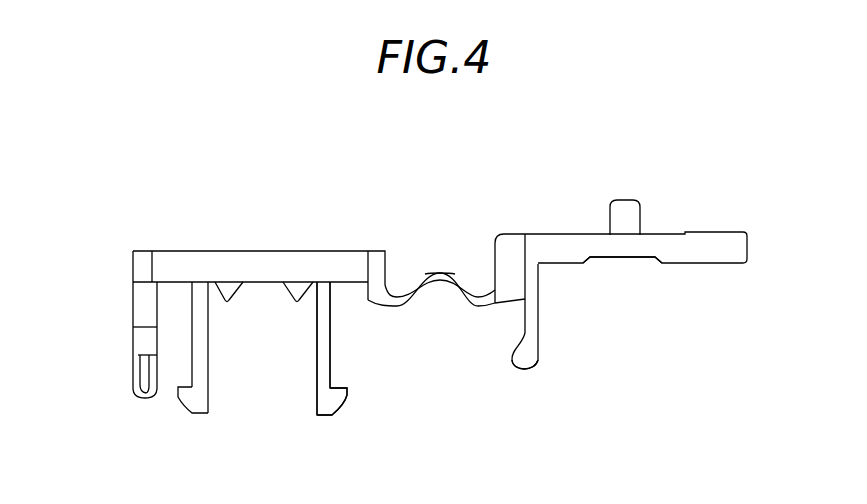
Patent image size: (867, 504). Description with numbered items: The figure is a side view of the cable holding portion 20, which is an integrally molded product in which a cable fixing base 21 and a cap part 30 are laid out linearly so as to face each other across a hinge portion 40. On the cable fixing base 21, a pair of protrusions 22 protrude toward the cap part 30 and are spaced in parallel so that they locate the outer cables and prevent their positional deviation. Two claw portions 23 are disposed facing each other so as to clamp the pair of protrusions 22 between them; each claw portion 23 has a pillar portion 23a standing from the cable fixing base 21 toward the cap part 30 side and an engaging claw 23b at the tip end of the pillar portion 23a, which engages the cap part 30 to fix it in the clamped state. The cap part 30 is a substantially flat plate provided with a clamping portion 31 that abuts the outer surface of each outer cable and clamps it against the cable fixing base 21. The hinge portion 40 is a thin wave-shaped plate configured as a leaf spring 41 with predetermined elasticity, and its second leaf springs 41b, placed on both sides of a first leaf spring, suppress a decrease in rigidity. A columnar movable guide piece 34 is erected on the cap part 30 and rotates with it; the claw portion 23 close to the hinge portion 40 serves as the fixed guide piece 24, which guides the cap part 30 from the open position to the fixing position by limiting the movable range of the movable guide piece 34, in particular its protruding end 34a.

The cable holding portion 20 is at (380, 232).
The cable fixing base 21 is at (280, 263).
The protrusions 22 is at (238, 296).
The claw portion 23 is at (246, 374).
The pillar portion 23a is at (192, 312).
The engaging claw 23b is at (180, 407).
The fixed guide piece 24 is at (312, 372).
The cap part 30 is at (672, 237).
The clamping portion 31 is at (632, 259).
The movable guide piece 34 is at (539, 318).
The protruding end 34a is at (527, 370).
The hinge portion 40 is at (455, 262).
The leaf spring 41 is at (439, 282).
The second leaf springs 41b is at (446, 340).